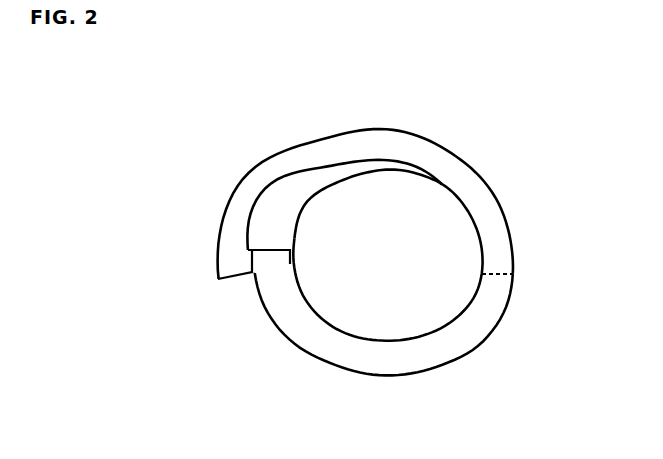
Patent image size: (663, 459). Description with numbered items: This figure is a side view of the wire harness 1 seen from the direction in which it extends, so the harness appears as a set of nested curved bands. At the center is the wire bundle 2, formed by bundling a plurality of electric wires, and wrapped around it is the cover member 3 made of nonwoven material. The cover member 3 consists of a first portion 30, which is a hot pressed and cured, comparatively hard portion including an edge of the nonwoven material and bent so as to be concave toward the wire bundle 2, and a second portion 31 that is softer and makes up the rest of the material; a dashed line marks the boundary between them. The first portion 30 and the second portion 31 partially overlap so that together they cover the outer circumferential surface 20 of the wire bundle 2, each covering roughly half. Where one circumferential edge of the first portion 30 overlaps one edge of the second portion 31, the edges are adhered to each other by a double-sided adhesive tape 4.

The wire harness 1 is at (462, 135).
The wire bundle 2 is at (383, 318).
The cover member 3 is at (503, 210).
The double-sided adhesive tape 4 is at (250, 262).
The outer circumferential surface 20 is at (323, 196).
The first portion 30 is at (336, 357).
The second portion 31 is at (373, 141).